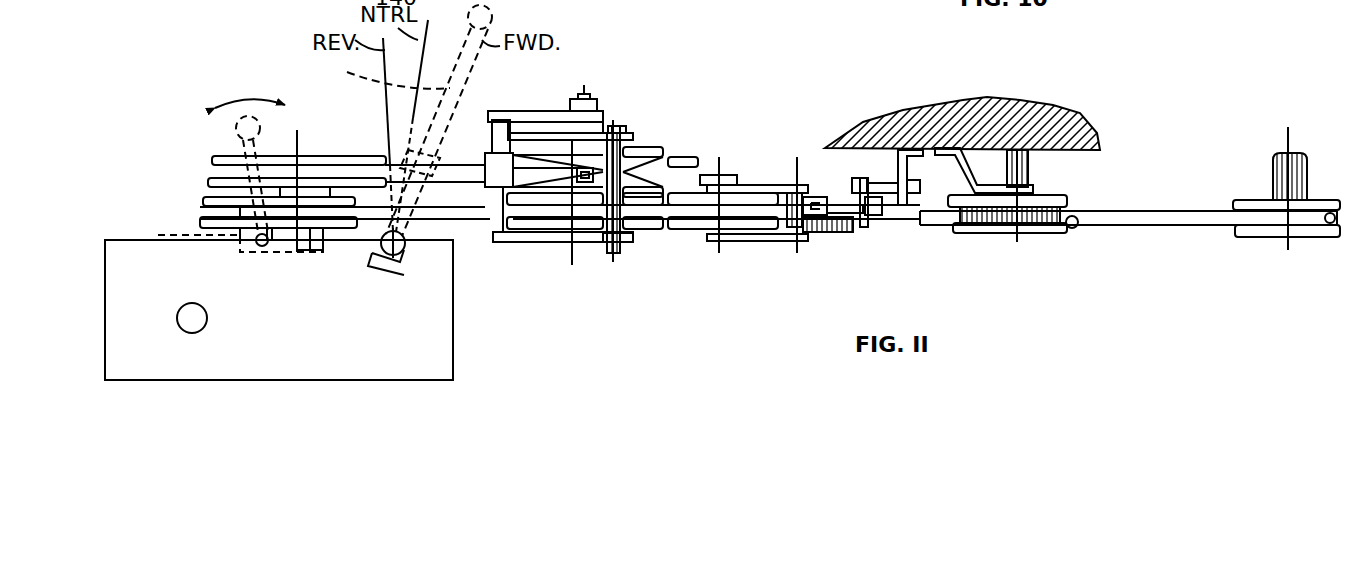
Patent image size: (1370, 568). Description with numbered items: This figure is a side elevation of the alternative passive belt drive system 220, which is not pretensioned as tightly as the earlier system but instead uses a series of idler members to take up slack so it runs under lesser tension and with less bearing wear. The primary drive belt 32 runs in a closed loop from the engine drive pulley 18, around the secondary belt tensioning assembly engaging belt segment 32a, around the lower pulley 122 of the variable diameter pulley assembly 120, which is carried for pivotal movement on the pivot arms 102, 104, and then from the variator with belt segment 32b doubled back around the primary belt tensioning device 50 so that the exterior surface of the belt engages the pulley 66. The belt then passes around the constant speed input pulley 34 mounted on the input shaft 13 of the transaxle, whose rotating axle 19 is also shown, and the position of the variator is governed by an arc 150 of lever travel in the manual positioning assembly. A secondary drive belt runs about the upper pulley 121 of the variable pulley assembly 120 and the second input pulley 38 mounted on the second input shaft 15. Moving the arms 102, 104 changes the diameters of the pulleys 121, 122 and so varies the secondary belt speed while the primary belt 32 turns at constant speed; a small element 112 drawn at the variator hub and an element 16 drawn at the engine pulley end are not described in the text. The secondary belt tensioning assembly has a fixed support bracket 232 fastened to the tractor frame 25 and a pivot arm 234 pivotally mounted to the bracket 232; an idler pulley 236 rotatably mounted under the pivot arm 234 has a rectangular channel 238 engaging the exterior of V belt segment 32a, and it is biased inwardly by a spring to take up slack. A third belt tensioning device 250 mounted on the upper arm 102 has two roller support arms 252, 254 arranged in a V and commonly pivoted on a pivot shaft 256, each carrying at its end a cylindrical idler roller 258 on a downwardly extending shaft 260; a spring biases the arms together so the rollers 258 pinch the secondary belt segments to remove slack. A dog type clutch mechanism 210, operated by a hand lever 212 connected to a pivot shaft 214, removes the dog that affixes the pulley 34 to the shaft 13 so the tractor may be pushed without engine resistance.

The input shaft 13 is at (282, 233).
The input shaft 15 is at (306, 233).
The handle knob 16 is at (1273, 178).
The engine drive pulley 18 is at (1253, 238).
The rotating axle 19 is at (200, 330).
The tractor frame 25 is at (911, 121).
The primary drive belt 32 is at (1153, 230).
The belt segment 32a is at (935, 225).
The belt segment 32b is at (444, 210).
The input pulley 34 is at (202, 200).
The second input pulley 38 is at (322, 155).
The primary belt tensioning device 50 is at (752, 178).
The pulley 66 is at (688, 233).
The pivot arm 102 is at (630, 135).
The pivot arm 104 is at (574, 240).
The key 112 is at (627, 170).
The variable diameter pulley assembly 120 is at (668, 138).
The upper pulley 121 is at (670, 158).
The lower pulley 122 is at (645, 245).
The shift lever arc 150 is at (347, 73).
The clutch mechanism 210 is at (240, 252).
The hand lever 212 is at (235, 131).
The pivot shaft 214 is at (235, 235).
The belt drive system 220 is at (1098, 112).
The fixed support bracket 232 is at (960, 167).
The pivot arm 234 is at (1040, 186).
The idler pulley 236 is at (1028, 234).
The rectangular channel 238 is at (1075, 229).
The third belt tensioning device 250 is at (581, 97).
The roller support arm 252 is at (542, 110).
The roller support arm 254 is at (492, 118).
The pivot shaft 256 is at (592, 100).
The idler roller 258 is at (498, 188).
The shaft 260 is at (490, 142).